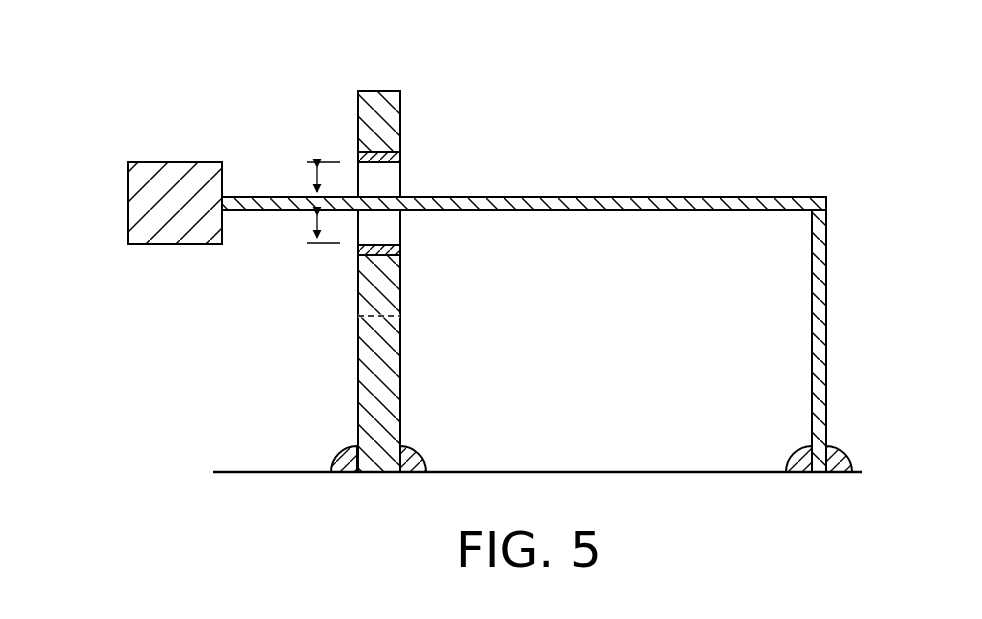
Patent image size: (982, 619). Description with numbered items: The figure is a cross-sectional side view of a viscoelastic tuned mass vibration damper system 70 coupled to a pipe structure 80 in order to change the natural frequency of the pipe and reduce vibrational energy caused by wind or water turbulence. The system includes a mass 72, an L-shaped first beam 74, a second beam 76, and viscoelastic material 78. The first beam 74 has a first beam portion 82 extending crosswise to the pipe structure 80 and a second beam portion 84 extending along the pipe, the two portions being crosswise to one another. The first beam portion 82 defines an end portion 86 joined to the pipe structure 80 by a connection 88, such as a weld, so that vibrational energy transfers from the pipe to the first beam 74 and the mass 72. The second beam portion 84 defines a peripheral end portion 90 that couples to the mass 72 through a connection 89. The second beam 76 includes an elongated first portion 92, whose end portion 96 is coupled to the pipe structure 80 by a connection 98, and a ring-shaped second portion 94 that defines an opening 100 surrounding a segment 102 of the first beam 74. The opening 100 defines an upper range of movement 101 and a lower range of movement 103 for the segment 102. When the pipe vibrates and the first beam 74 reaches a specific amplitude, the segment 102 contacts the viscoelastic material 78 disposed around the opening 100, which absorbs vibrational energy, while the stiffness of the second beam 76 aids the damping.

The vibration damper system 70 is at (133, 66).
The mass 72 is at (180, 168).
The first beam 74 is at (795, 149).
The second beam 76 is at (186, 338).
The viscoelastic material 78 is at (362, 157).
The pipe structure 80 is at (608, 474).
The first beam portion 82 is at (822, 340).
The second beam portion 84 is at (591, 196).
The end portion 86 is at (818, 474).
The connection 88 is at (805, 456).
The connection 89 is at (224, 200).
The peripheral end portion 90 is at (222, 212).
The first portion 92 is at (398, 351).
The second portion 94 is at (377, 92).
The end portion 96 is at (382, 472).
The connection 98 is at (420, 458).
The opening 100 is at (395, 183).
The upper range of movement 101 is at (312, 182).
The segment 102 is at (372, 207).
The lower range of movement 103 is at (311, 229).